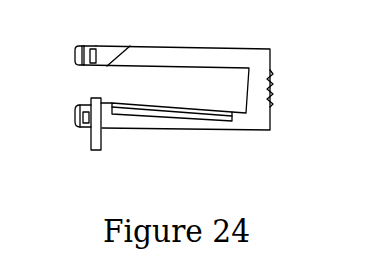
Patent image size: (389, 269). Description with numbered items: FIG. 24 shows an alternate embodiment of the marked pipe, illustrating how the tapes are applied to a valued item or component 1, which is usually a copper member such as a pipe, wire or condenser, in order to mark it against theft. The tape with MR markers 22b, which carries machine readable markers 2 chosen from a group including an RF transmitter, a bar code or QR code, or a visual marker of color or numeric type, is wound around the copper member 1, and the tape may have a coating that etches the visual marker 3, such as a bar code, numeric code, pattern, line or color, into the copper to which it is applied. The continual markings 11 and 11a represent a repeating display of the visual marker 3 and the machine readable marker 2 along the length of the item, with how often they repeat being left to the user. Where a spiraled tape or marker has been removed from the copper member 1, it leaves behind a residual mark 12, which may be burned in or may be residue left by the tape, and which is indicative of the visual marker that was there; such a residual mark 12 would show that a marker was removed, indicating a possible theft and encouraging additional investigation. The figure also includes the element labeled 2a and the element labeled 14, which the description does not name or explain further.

The valued item 1 is at (172, 127).
The machine readable marker 2 is at (103, 133).
The end cap 2a is at (78, 124).
The visual marker 3 is at (88, 46).
The continual markings 11 is at (76, 61).
The continual markings 11a is at (75, 116).
The residual mark 12 is at (168, 66).
The spring 14 is at (272, 76).
The tape with MR markers 22b is at (137, 102).